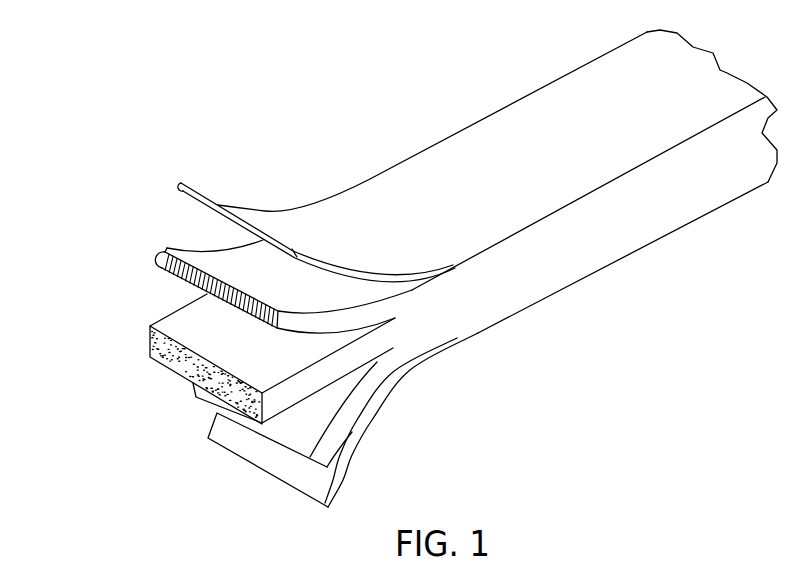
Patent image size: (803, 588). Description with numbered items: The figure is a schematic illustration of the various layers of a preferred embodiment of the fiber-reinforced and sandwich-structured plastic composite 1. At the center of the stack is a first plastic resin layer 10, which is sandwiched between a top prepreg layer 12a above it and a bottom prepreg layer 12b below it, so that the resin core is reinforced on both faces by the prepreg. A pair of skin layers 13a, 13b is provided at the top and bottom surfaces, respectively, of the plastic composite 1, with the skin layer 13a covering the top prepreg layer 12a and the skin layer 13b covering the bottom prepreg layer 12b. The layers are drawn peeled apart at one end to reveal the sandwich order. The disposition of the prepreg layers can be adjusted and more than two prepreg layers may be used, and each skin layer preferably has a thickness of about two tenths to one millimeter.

The fiber-reinforced and sandwich-structured plastic composite 1 is at (302, 101).
The skin layer 13a is at (455, 163).
The top prepreg layer 12a is at (236, 222).
The first plastic resin layer 10 is at (226, 359).
The bottom prepreg layer 12b is at (220, 392).
The skin layer 13b is at (343, 420).